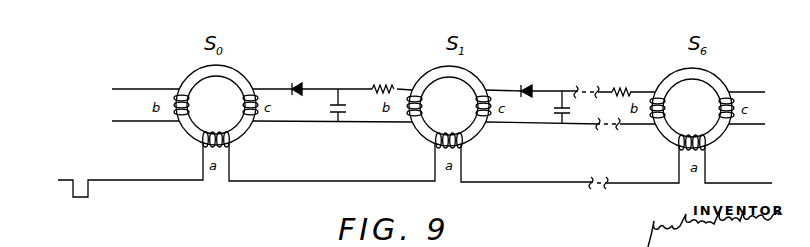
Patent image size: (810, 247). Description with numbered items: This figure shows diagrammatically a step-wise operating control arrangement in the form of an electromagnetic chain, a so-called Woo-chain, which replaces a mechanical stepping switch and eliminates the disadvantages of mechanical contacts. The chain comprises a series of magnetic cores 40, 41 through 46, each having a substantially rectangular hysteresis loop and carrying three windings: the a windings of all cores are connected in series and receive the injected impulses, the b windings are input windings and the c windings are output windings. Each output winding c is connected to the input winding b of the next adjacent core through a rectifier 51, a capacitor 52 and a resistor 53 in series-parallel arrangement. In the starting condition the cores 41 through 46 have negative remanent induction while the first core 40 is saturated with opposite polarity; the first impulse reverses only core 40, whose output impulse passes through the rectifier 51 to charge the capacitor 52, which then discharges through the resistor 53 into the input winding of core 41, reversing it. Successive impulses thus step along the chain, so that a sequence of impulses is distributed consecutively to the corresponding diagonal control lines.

The magnetic core 40 is at (237, 76).
The magnetic core 41 is at (474, 80).
The magnetic core 46 is at (712, 81).
The rectifier 51 is at (298, 88).
The capacitor 52 is at (333, 110).
The resistor 53 is at (382, 86).